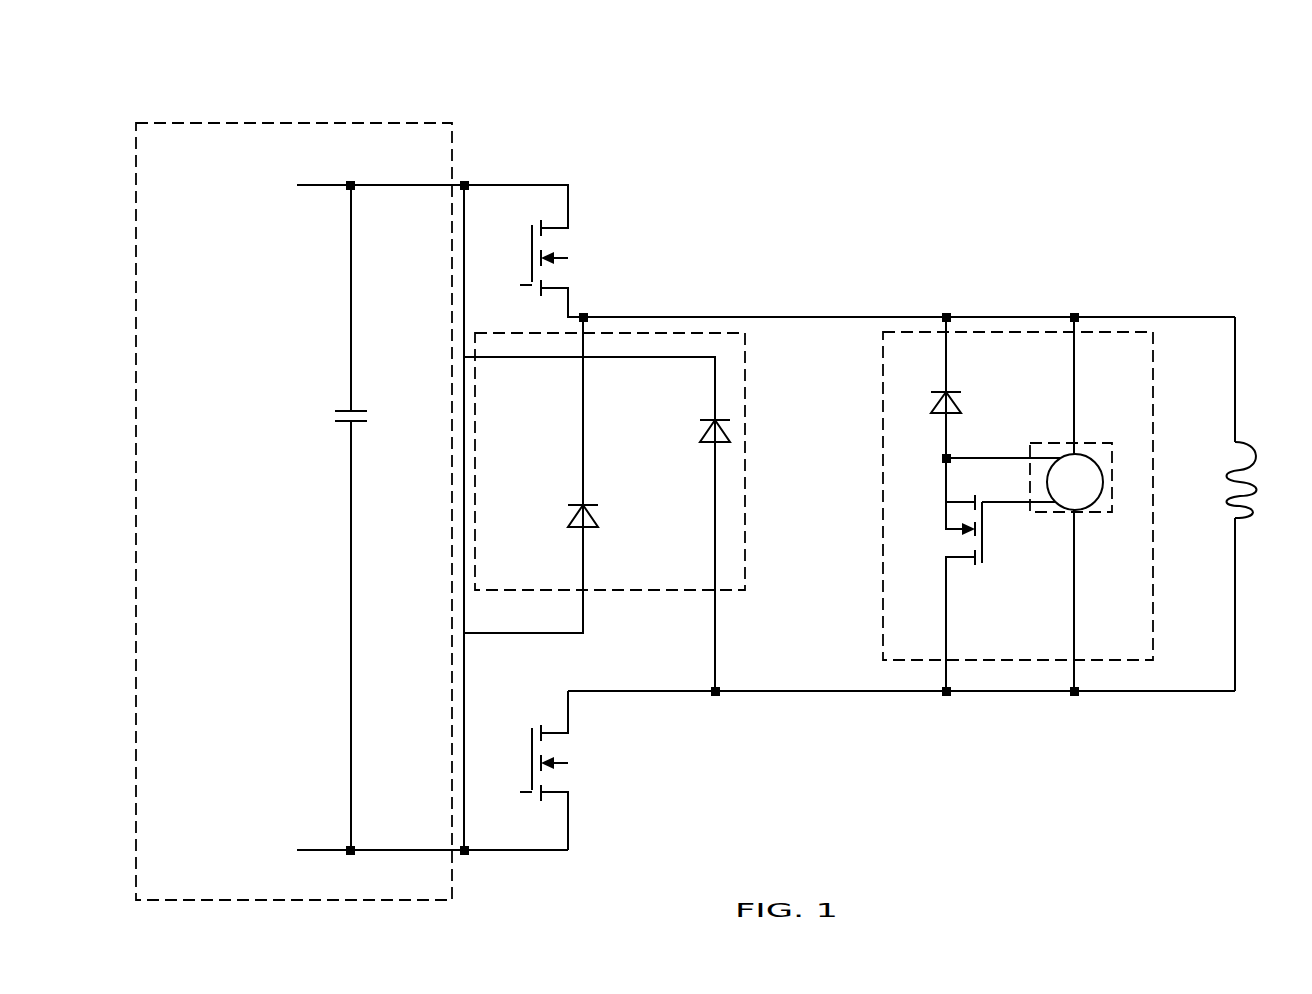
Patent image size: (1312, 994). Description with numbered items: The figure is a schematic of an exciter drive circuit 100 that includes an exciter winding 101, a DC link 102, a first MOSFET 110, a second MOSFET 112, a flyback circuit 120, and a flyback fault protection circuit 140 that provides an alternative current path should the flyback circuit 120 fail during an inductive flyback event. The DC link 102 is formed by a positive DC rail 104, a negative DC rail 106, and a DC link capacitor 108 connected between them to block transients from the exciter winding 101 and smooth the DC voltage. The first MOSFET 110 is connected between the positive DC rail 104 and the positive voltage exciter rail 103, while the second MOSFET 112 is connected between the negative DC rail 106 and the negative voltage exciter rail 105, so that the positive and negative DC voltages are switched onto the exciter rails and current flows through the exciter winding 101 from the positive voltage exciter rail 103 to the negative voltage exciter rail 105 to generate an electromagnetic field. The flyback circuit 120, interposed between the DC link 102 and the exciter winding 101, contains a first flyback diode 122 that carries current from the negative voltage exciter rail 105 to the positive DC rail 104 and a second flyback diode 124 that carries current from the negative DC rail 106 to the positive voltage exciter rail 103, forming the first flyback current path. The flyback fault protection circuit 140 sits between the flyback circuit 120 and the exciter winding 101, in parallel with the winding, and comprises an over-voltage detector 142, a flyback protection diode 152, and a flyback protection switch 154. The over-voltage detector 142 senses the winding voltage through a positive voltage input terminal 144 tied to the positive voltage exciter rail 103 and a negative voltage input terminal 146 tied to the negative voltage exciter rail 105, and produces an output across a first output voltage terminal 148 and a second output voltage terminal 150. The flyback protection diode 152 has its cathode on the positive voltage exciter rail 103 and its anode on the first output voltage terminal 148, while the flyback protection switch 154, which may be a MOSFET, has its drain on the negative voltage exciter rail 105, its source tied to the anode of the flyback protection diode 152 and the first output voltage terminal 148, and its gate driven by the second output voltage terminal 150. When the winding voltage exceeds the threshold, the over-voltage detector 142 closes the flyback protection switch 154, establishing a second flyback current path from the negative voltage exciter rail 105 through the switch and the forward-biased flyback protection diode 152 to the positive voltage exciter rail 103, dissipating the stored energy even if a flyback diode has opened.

The exciter drive circuit 100 is at (835, 155).
The exciter winding 101 is at (1245, 445).
The DC link 102 is at (302, 115).
The positive voltage exciter rail 103 is at (862, 317).
The positive DC rail 104 is at (323, 190).
The negative voltage exciter rail 105 is at (838, 693).
The negative DC rail 106 is at (325, 848).
The DC link capacitor 108 is at (340, 412).
The first MOSFET 110 is at (532, 240).
The second MOSFET 112 is at (532, 745).
The flyback circuit 120 is at (668, 600).
The first flyback diode 122 is at (707, 440).
The second flyback diode 124 is at (575, 527).
The flyback fault protection circuit 140 is at (872, 447).
The over-voltage detector 142 is at (1080, 452).
The positive voltage input terminal 144 is at (1074, 357).
The negative voltage input terminal 146 is at (1075, 627).
The first output voltage terminal 148 is at (988, 458).
The second output voltage terminal 150 is at (1020, 503).
The flyback protection diode 152 is at (940, 415).
The flyback protection switch 154 is at (985, 560).